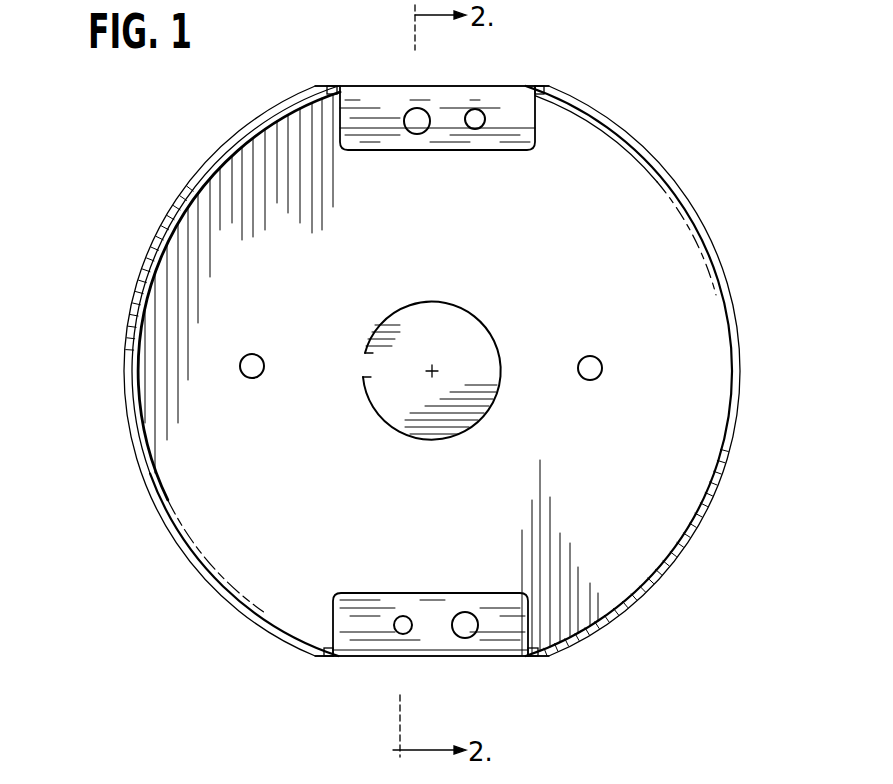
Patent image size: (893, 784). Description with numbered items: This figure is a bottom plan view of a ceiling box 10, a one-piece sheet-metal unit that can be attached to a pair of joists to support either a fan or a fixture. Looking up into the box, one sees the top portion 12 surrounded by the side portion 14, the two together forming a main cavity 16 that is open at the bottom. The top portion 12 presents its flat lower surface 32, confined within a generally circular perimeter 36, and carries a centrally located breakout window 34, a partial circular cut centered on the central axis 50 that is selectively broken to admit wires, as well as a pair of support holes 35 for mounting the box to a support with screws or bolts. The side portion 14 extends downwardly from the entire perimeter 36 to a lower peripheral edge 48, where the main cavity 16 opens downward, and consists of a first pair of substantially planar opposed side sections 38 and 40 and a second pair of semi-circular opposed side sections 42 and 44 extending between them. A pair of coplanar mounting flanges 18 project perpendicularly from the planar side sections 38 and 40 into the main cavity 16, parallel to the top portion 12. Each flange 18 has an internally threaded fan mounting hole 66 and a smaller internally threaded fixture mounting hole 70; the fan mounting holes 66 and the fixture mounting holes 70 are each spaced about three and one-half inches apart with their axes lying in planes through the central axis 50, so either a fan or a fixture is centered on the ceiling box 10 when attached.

The ceiling box 10 is at (162, 161).
The top portion 12 is at (590, 238).
The side portion 14 is at (132, 503).
The main cavity 16 is at (636, 432).
The mounting members or flanges 18 is at (377, 105).
The lower surface 32 is at (358, 495).
The breakout window 34 is at (430, 328).
The support holes 35 is at (258, 366).
The perimeter 36 is at (150, 266).
The side section 38 is at (505, 86).
The side section 40 is at (495, 660).
The side section 42 is at (125, 372).
The side section 44 is at (741, 338).
The lower peripheral edge 48 is at (215, 585).
The central axis 50 is at (435, 368).
The fan mounting hole 66 is at (417, 134).
The fixture mounting hole 70 is at (477, 129).